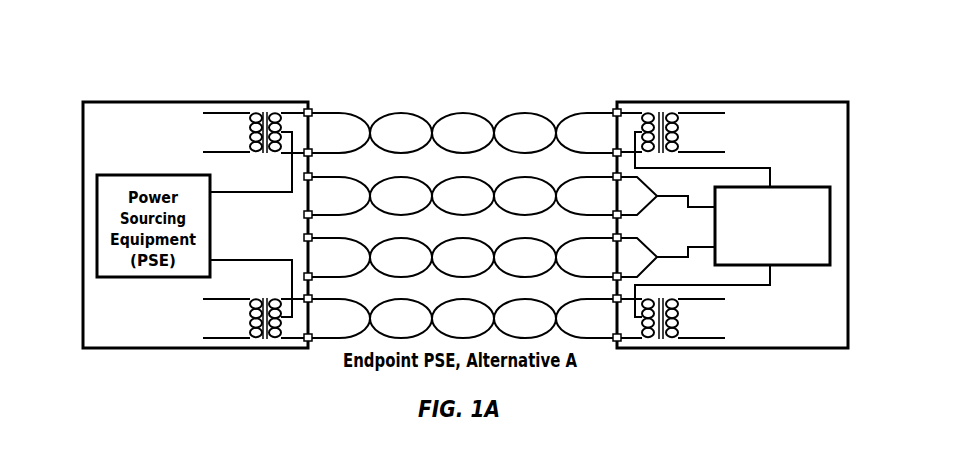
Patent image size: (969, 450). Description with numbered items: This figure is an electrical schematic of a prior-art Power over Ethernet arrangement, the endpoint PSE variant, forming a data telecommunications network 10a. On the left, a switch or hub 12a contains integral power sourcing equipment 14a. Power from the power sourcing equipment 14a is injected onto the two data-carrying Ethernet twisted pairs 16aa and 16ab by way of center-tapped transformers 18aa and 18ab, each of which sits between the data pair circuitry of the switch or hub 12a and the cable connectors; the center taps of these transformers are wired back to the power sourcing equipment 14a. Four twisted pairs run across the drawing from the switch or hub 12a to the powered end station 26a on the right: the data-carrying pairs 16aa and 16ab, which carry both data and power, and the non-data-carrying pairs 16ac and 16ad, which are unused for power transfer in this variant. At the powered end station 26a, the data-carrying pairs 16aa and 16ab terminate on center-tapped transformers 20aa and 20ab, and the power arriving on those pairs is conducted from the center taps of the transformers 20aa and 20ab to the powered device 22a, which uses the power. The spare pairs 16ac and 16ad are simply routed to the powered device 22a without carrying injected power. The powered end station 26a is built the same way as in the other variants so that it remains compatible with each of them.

The data telecommunications network 10a is at (522, 79).
The switch or hub 12a is at (270, 112).
The power sourcing equipment 14a is at (97, 225).
The data carrying Ethernet twisted pair 16aa is at (401, 113).
The data carrying Ethernet twisted pair 16ab is at (401, 299).
The non-data carrying Ethernet twisted pair 16ac is at (401, 177).
The non-data carrying Ethernet twisted pair 16ad is at (401, 238).
The center-tapped transformer 18aa is at (276, 113).
The center-tapped transformer 18ab is at (276, 343).
The center-tapped transformer 20aa is at (651, 113).
The center-tapped transformer 20ab is at (647, 343).
The powered device 22a is at (830, 224).
The powered end station 26a is at (848, 325).